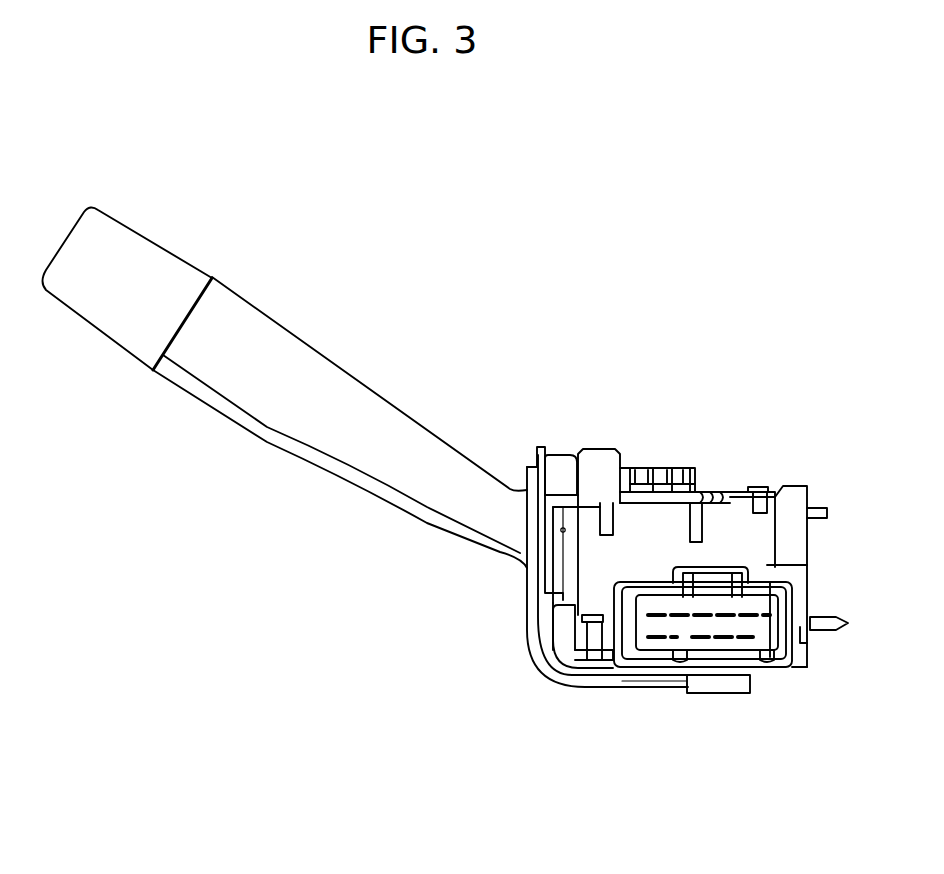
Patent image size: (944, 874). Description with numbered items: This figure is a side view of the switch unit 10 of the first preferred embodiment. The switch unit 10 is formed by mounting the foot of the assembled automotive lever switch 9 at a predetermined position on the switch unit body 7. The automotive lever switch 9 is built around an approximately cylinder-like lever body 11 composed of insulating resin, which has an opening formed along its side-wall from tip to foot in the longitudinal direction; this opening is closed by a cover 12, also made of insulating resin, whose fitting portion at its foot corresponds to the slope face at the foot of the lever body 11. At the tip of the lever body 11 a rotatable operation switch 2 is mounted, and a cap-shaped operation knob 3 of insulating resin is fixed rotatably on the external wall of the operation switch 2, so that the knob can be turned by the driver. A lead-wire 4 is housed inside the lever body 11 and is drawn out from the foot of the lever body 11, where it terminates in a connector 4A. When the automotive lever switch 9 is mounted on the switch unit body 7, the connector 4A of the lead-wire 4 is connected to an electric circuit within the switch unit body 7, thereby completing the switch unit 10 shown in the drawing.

The rotatable operation switch 2 is at (148, 322).
The operation knob 3 is at (108, 322).
The lead-wire 4 is at (637, 688).
The connector 4A is at (708, 694).
The switch unit body 7 is at (595, 573).
The automotive lever switch 9 is at (44, 392).
The switch unit 10 is at (55, 471).
The lever body 11 is at (350, 437).
The cover 12 is at (264, 430).